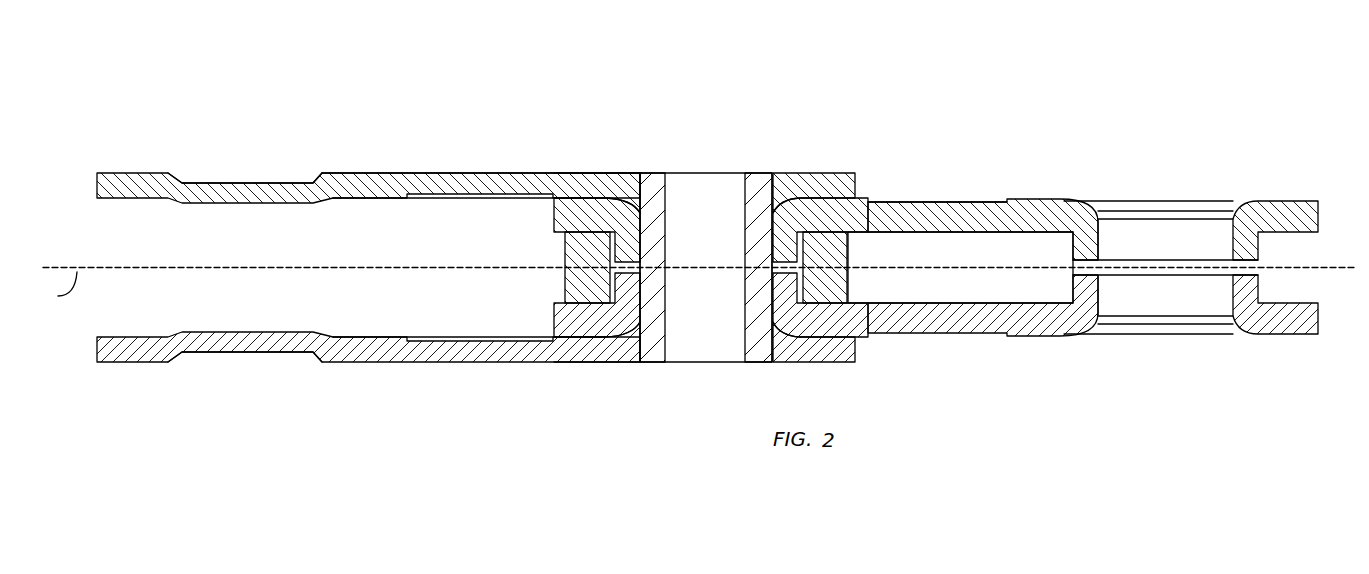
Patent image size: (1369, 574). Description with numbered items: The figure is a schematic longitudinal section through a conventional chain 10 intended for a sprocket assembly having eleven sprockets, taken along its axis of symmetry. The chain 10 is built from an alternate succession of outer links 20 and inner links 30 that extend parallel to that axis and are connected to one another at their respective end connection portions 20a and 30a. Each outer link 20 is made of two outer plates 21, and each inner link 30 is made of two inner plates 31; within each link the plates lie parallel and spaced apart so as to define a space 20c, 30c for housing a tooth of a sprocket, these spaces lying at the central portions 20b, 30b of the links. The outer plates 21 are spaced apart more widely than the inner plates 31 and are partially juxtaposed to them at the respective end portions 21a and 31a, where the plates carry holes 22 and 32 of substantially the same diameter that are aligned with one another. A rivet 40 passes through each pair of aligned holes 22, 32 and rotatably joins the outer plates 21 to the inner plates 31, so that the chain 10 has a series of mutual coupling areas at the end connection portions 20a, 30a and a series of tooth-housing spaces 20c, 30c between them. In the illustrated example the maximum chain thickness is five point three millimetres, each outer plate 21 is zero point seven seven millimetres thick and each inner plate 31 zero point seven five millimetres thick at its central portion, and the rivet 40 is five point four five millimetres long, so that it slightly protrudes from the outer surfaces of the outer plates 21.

The chain 10 is at (1324, 141).
The outer link 20 is at (392, 384).
The end connection portion of outer link 20a is at (700, 157).
The central portion of outer link 20b is at (457, 158).
The space of outer link 20c is at (498, 297).
The outer plate 21 is at (407, 172).
The end portion of outer plate 21a is at (803, 170).
The hole of outer plate 22 is at (224, 168).
The inner link 30 is at (1058, 355).
The end connection portion of inner link 30a is at (814, 267).
The central portion of inner link 30b is at (923, 197).
The space of inner link 30c is at (933, 279).
The inner plate 31 is at (1017, 205).
The end portion of inner plate 31a is at (590, 178).
The hole of inner plate 32 is at (1187, 197).
The rivet 40 is at (745, 310).